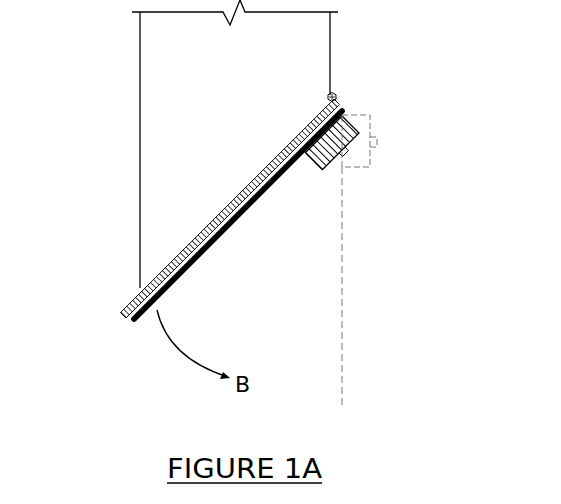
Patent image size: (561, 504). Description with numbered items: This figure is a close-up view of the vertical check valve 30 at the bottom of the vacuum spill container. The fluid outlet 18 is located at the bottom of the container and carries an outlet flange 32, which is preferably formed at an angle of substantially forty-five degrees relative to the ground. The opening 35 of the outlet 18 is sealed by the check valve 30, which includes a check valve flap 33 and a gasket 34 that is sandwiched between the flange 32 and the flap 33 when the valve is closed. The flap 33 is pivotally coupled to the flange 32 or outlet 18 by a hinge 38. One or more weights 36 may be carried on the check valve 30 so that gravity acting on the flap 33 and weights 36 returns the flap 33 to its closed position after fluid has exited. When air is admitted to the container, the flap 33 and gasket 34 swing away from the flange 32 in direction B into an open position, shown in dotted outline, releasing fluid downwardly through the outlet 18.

The fluid outlet 18 is at (140, 134).
The vertical check valve 30 is at (199, 228).
The outlet flange 32 is at (119, 308).
The check valve flap 33 is at (210, 250).
The gasket 34 is at (131, 321).
The opening 35 is at (202, 202).
The weights 36 is at (338, 135).
The hinge 38 is at (336, 95).